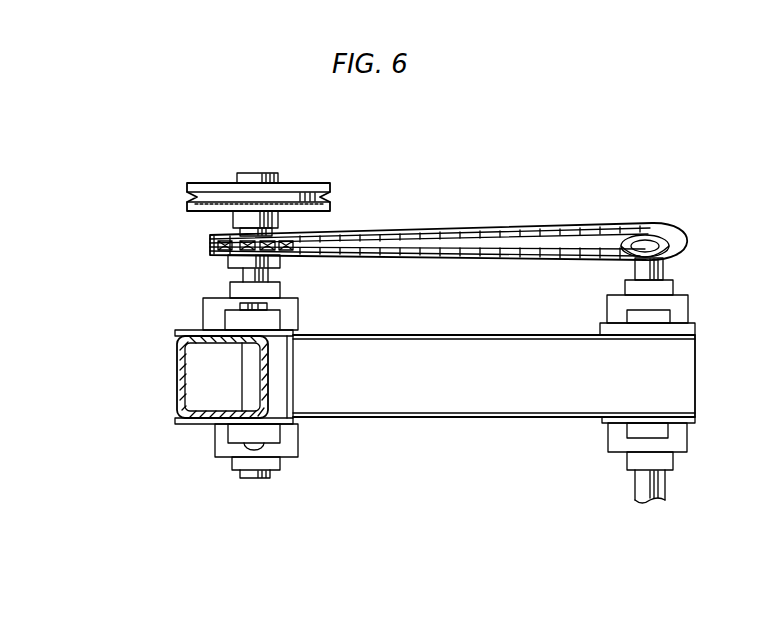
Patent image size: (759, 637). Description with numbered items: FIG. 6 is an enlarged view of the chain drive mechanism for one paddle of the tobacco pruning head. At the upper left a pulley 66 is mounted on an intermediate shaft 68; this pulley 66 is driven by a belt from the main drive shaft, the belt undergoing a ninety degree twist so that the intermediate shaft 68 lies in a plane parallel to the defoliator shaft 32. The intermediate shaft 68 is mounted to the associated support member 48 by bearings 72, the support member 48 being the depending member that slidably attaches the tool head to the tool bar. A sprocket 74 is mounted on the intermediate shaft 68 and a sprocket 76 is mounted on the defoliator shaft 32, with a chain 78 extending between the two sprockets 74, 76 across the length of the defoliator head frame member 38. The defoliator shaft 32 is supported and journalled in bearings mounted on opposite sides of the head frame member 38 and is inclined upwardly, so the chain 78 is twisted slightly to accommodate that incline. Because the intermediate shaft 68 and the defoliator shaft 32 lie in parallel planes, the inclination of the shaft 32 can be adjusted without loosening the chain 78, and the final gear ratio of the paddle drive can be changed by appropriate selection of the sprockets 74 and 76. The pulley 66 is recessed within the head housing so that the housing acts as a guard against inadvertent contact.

The defoliator shaft 32 is at (668, 266).
The defoliator head frame member 38 is at (428, 395).
The support member 48 is at (263, 358).
The pulley 66 is at (225, 182).
The intermediate shaft 68 is at (243, 274).
The bearing 72 is at (220, 440).
The sprocket 74 is at (280, 262).
The sprocket 76 is at (683, 228).
The chain 78 is at (480, 237).